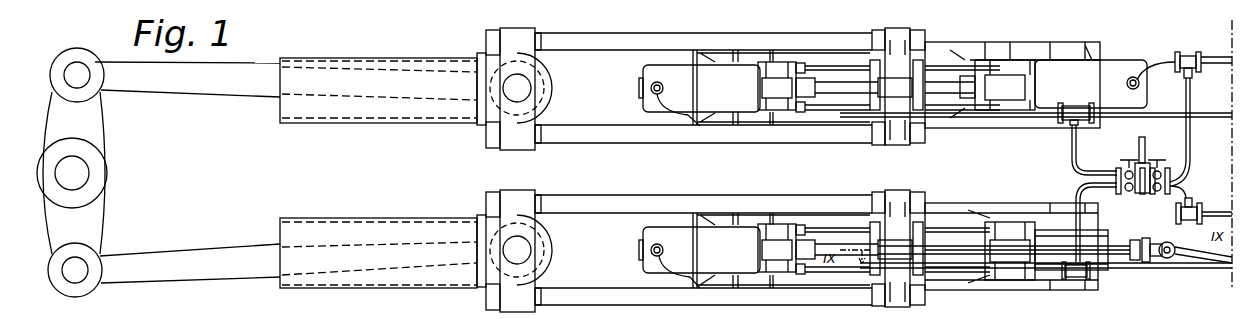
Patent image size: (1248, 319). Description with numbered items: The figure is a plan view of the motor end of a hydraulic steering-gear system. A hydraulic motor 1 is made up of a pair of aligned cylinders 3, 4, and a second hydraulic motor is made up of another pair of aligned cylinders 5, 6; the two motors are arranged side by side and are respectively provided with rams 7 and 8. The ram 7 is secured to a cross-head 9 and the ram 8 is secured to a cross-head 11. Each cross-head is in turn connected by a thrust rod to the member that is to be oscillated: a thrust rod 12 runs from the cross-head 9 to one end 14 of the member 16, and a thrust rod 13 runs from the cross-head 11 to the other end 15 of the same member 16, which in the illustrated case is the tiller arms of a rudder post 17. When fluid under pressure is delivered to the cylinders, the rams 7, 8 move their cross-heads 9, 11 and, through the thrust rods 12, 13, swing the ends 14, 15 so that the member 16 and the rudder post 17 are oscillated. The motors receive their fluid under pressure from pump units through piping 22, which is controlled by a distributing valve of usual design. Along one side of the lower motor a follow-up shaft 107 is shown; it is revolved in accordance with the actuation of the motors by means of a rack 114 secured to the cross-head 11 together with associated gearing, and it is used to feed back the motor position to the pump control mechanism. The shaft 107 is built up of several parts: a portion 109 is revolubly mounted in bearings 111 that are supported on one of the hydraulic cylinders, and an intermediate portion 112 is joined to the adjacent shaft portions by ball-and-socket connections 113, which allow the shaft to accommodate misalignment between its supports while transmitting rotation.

The hydraulic motor 1 is at (896, 28).
The cylinder 3 is at (727, 94).
The cylinder 4 is at (1067, 85).
The cylinder 5 is at (727, 256).
The cylinder 6 is at (1050, 225).
The ram 7 is at (838, 70).
The ram 8 is at (838, 232).
The cross-head 9 is at (898, 146).
The cross-head 11 is at (896, 195).
The thrust rod 12 is at (221, 95).
The thrust rod 13 is at (202, 256).
The end of member 14 is at (62, 62).
The end of member 15 is at (70, 294).
The member to be oscillated 16 is at (97, 173).
The rudder post 17 is at (72, 173).
The piping 22 is at (1213, 118).
The follow-up shaft 107 is at (1175, 239).
The shaft portion 109 is at (1135, 262).
The bearings 111 is at (1146, 262).
The intermediate portion 112 is at (1222, 265).
The ball-and-socket connections 113 is at (1158, 258).
The rack 114 is at (948, 242).